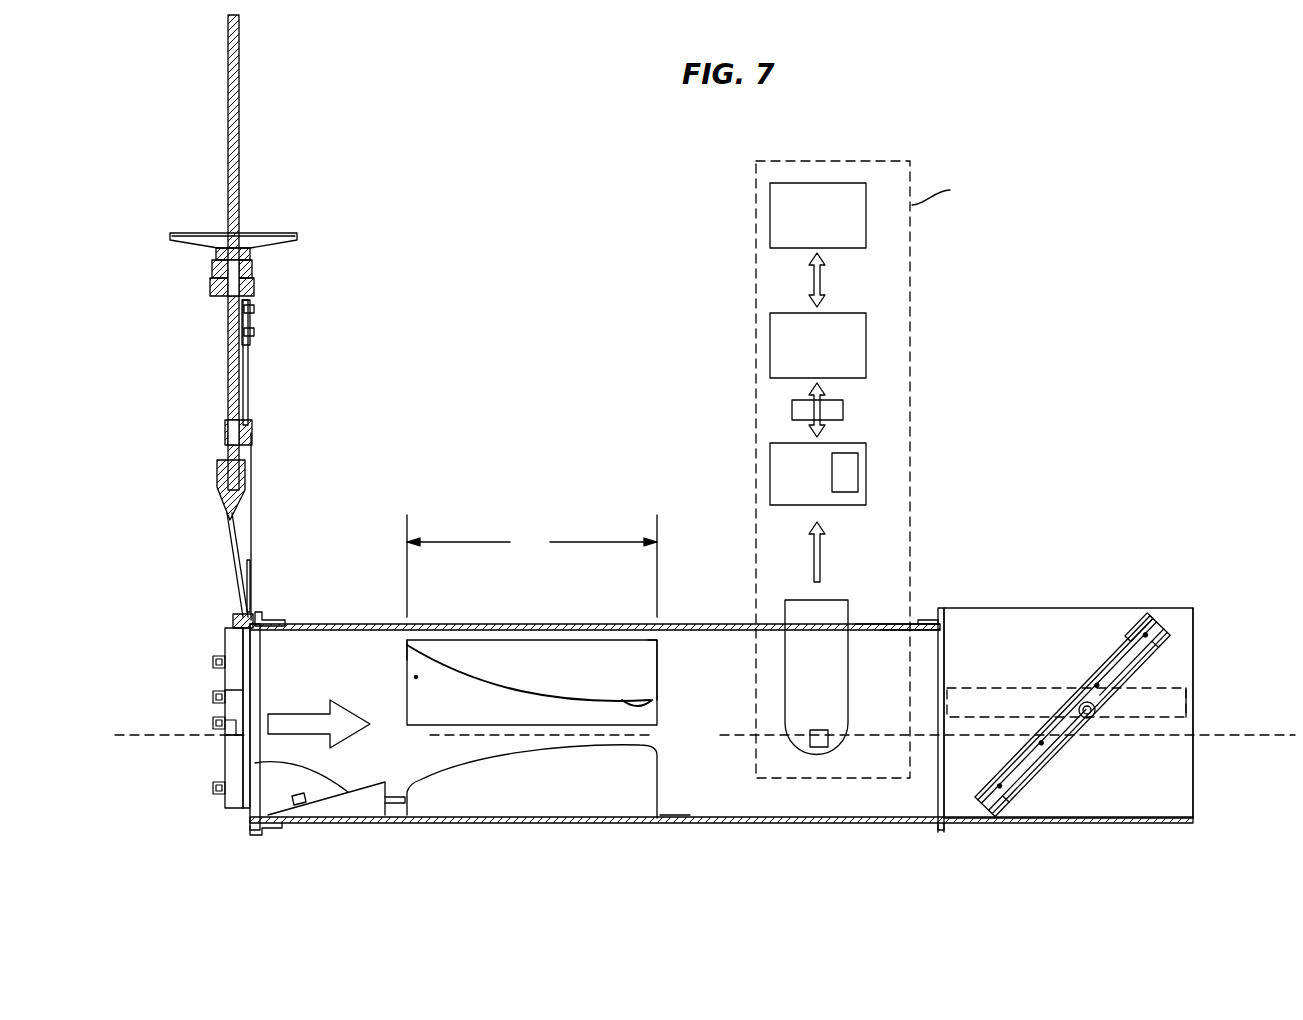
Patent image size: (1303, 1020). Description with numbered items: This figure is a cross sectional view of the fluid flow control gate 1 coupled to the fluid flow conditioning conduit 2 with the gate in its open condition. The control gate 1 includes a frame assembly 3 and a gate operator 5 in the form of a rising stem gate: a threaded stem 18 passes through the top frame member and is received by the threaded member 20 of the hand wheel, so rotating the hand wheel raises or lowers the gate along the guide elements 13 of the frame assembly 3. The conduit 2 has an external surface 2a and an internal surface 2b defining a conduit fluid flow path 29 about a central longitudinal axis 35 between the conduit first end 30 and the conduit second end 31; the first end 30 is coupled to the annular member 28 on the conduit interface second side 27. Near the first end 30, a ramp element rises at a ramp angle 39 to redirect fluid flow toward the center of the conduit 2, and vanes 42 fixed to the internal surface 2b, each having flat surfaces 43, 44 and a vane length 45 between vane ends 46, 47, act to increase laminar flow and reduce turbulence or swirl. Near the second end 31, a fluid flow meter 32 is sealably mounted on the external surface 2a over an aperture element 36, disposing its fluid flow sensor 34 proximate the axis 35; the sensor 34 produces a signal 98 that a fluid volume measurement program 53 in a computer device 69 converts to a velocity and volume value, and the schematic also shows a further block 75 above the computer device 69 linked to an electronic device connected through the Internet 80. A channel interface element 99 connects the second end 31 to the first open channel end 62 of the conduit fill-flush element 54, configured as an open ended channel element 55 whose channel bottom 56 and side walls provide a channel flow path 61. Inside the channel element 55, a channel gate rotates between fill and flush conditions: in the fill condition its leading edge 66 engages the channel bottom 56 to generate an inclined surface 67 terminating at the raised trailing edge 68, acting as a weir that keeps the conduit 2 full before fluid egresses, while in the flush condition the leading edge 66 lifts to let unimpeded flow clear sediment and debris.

The fluid flow control gate 1 is at (180, 352).
The fluid flow conditioning conduit 2 is at (797, 830).
The conduit external surface 2a is at (735, 823).
The conduit internal surface 2b is at (718, 820).
The frame assembly 3 is at (258, 328).
The gate operator 5 is at (297, 220).
The guide element 13 is at (247, 393).
The threaded stem 18 is at (239, 103).
The threaded member 20 is at (252, 277).
The conduit interface second side 27 is at (251, 572).
The annular member 28 is at (268, 612).
The conduit fluid flow path 29 is at (697, 737).
The conduit first end 30 is at (318, 627).
The conduit second end 31 is at (893, 622).
The fluid flow meter 32 is at (835, 672).
The fluid flow sensor 34 is at (833, 737).
The central longitudinal axis 35 is at (153, 735).
The aperture element 36 is at (860, 625).
The ramp angle 39 is at (330, 789).
The vane 42 is at (483, 660).
The flat surface 43 is at (642, 678).
The flat surface 44 is at (648, 700).
The vane length 45 is at (532, 566).
The vane end 46 is at (395, 626).
The vane end 47 is at (655, 663).
The fluid volume measurement program 53 is at (845, 472).
The conduit fill-flush element 54 is at (1062, 600).
The channel element 55 is at (1100, 608).
The channel bottom 56 is at (1100, 823).
The channel flow path 61 is at (1066, 702).
The first open channel end 62 is at (942, 823).
The leading edge 66 is at (1160, 625).
The inclined surface 67 is at (1088, 697).
The trailing edge 68 is at (1182, 662).
The computer device 69 is at (818, 474).
The display unit 75 is at (886, 469).
The Internet 80 is at (843, 410).
The signal 98 is at (820, 557).
The channel interface element 99 is at (928, 620).